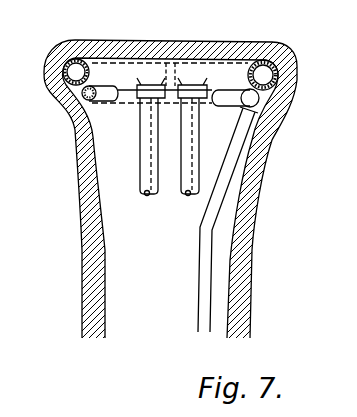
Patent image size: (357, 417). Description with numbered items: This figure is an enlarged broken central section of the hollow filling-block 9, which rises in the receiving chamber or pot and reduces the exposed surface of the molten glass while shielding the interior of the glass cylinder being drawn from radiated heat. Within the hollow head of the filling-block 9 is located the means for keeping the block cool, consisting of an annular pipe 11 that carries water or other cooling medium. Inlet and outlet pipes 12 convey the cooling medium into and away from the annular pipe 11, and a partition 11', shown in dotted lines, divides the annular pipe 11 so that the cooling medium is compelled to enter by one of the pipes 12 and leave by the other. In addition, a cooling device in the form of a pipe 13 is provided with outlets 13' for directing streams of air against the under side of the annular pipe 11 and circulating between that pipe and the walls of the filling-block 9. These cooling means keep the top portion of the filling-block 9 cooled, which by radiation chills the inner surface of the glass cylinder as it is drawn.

The filling-block 9 is at (252, 184).
The annular pipe 11 is at (204, 74).
The partition 11' is at (199, 47).
The inlet and outlet pipes 12 is at (186, 195).
The pipe 13 is at (174, 209).
The outlets 13' is at (65, 114).